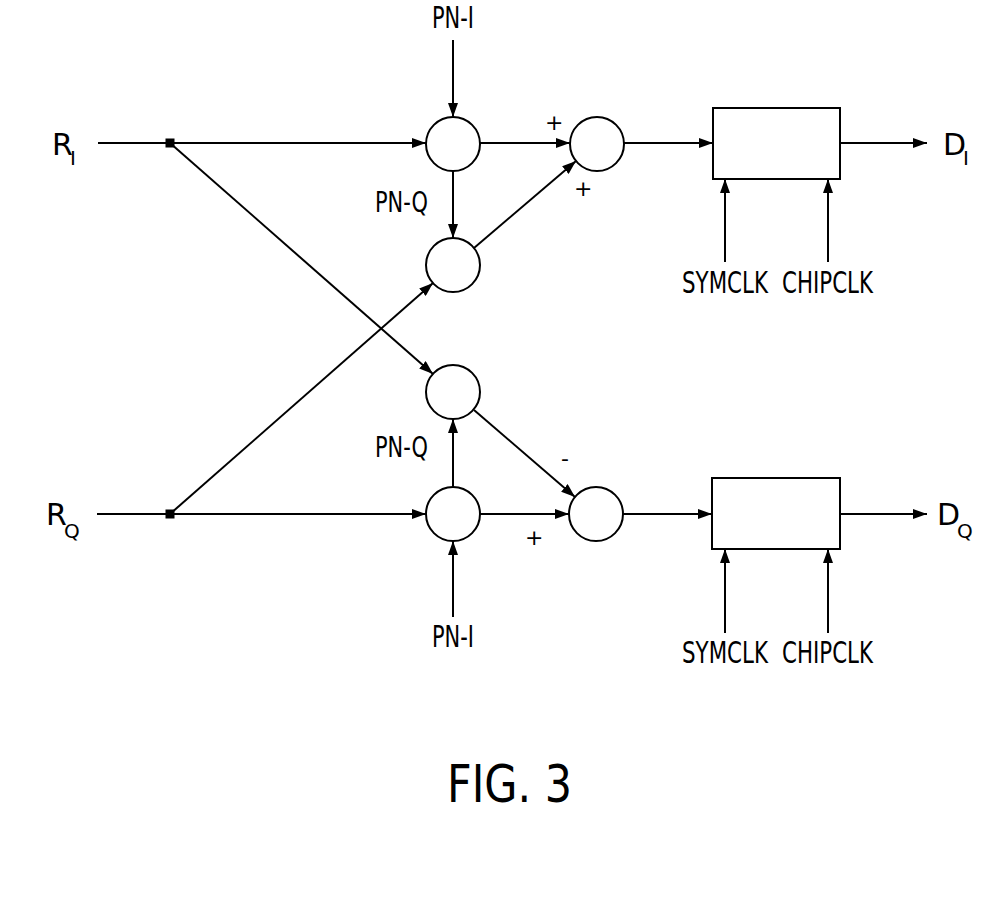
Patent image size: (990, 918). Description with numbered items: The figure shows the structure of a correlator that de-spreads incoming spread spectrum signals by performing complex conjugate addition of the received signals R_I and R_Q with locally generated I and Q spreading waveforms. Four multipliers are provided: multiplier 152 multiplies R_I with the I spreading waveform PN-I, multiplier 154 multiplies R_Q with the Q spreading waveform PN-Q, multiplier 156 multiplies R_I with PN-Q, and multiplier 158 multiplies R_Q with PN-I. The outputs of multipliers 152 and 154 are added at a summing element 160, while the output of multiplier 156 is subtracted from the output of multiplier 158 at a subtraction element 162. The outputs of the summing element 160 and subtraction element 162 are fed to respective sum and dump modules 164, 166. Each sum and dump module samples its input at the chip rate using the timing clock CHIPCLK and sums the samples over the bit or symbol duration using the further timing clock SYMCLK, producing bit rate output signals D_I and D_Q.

The multiplier 152 is at (476, 122).
The multiplier 154 is at (482, 263).
The multiplier 156 is at (476, 372).
The multiplier 158 is at (476, 497).
The summing element 160 is at (597, 117).
The subtraction element 162 is at (597, 487).
The sum and dump module 164 is at (774, 108).
The sum and dump module 166 is at (774, 478).